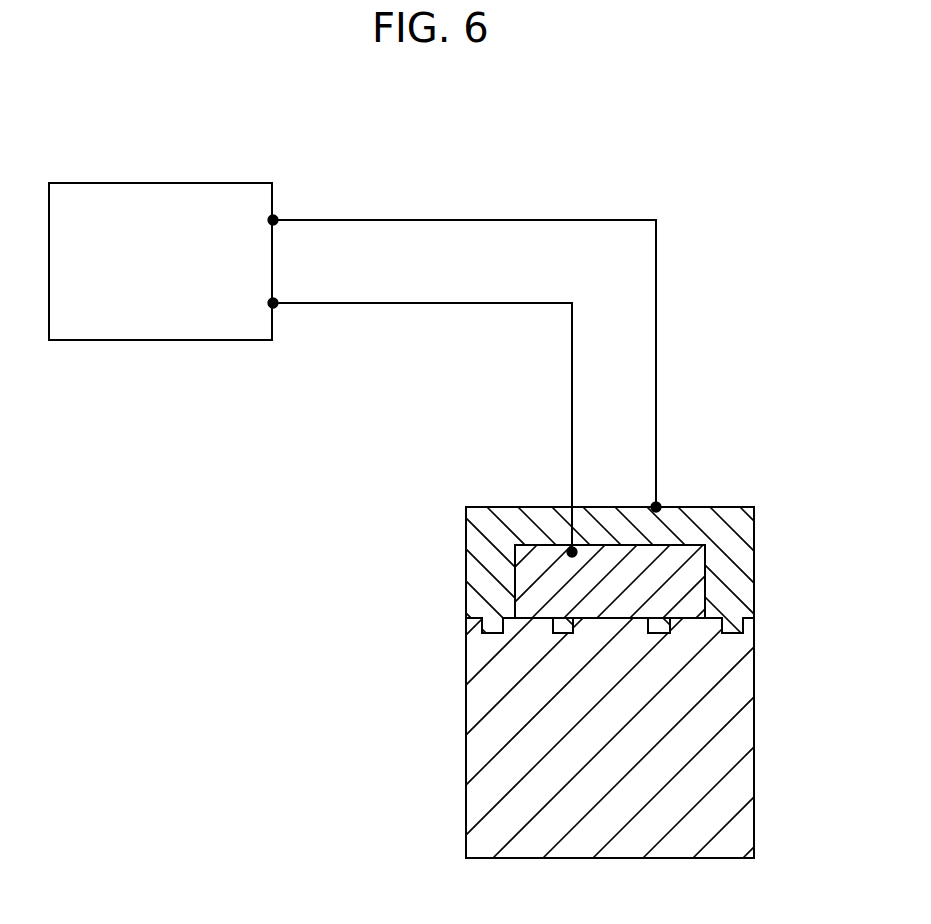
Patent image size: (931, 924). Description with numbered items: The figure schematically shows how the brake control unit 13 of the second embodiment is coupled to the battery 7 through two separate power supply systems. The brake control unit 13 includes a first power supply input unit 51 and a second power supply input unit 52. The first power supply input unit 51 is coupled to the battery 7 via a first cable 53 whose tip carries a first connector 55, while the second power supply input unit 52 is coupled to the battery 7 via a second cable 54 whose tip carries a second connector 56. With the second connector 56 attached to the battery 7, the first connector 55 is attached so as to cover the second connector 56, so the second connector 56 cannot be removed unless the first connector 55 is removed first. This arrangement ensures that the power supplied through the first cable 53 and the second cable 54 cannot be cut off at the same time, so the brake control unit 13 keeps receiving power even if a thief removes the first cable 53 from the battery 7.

The brake control unit 13 is at (118, 183).
The first power supply input unit 51 is at (274, 217).
The second power supply input unit 52 is at (275, 307).
The first cable 53 is at (448, 219).
The second cable 54 is at (443, 305).
The first connector 55 is at (725, 507).
The second connector 56 is at (517, 585).
The battery 7 is at (754, 683).